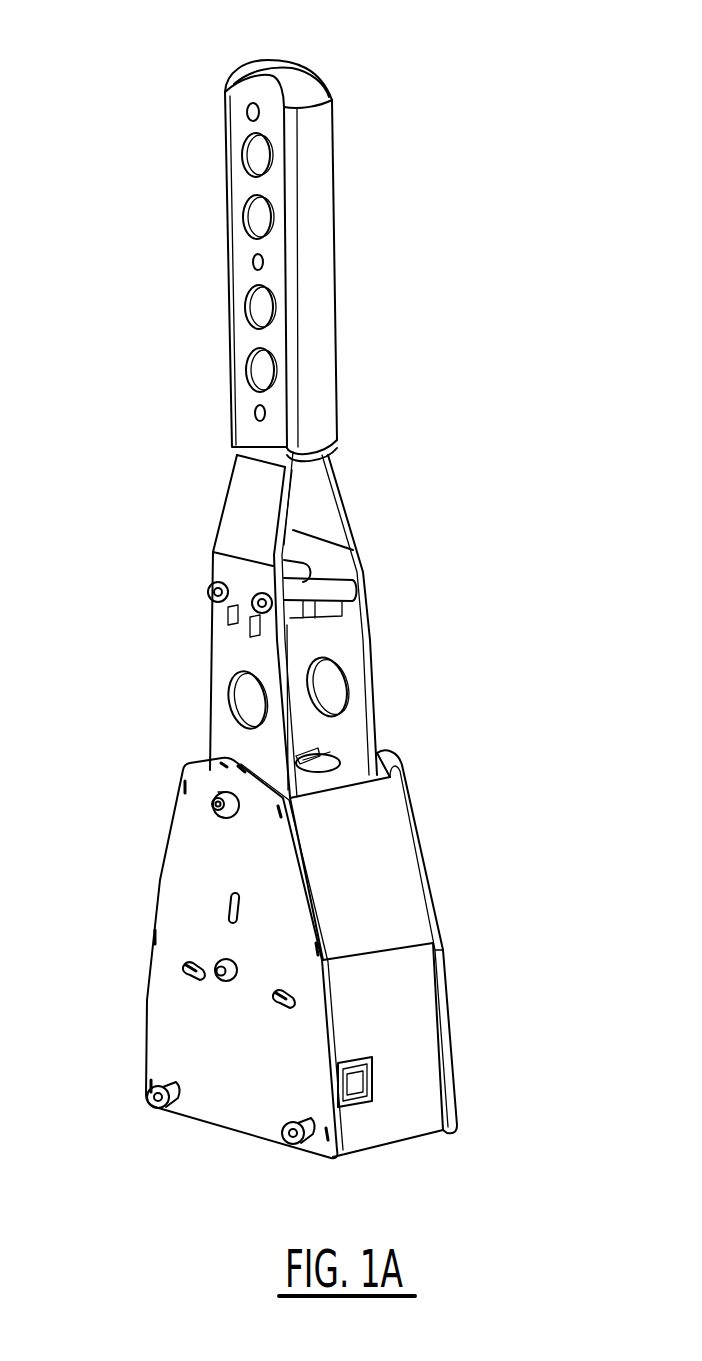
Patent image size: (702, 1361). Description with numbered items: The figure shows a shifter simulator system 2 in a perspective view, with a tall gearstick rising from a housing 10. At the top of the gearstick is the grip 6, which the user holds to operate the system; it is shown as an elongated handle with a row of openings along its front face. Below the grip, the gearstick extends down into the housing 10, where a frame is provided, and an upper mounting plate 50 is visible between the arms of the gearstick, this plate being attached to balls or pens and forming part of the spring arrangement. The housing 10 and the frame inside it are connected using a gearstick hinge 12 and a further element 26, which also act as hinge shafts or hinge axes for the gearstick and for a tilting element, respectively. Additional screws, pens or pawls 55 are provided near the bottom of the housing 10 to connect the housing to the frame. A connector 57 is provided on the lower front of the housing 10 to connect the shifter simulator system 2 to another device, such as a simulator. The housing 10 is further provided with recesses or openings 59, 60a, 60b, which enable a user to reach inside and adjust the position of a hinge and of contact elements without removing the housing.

The shifter simulator system 2 is at (470, 67).
The grip 6 is at (318, 258).
The housing 10 is at (420, 963).
The gearstick hinge 12 is at (215, 805).
The element acting as hinge shaft 26 is at (222, 970).
The upper mounting plate 50 is at (322, 607).
The screws, pens or pawls 55 is at (290, 1126).
The connector 57 is at (362, 1097).
The recess or opening 59 is at (232, 906).
The recess or opening 60a is at (190, 975).
The recess or opening 60b is at (285, 1002).